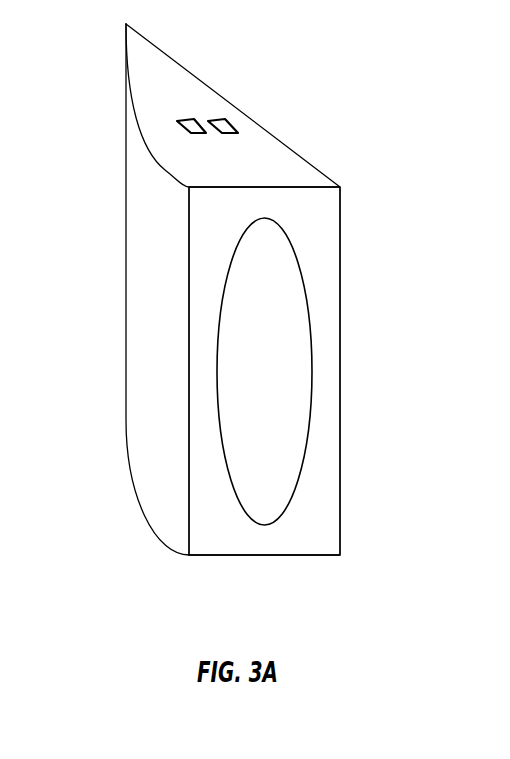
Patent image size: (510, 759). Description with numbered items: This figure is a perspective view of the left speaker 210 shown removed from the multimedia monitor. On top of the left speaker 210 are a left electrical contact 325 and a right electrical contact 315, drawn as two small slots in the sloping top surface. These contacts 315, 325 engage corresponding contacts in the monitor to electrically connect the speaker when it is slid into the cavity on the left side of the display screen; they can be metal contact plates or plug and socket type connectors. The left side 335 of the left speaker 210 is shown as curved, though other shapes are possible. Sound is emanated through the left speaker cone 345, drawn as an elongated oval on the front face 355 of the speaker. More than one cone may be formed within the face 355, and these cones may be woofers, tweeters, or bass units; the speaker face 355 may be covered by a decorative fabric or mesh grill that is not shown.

The left speaker 210 is at (277, 289).
The right electrical contact 315 is at (262, 111).
The left electrical contact 325 is at (238, 95).
The left side 335 is at (127, 289).
The left speaker cone 345 is at (313, 371).
The face 355 is at (299, 371).